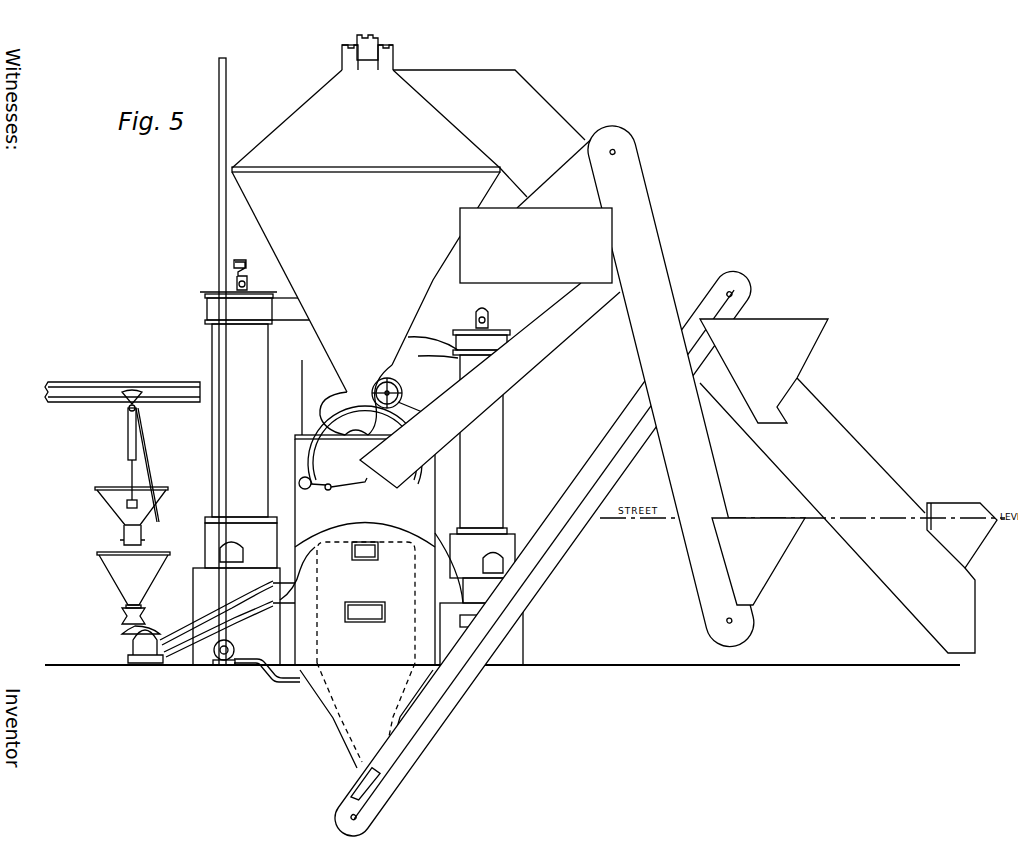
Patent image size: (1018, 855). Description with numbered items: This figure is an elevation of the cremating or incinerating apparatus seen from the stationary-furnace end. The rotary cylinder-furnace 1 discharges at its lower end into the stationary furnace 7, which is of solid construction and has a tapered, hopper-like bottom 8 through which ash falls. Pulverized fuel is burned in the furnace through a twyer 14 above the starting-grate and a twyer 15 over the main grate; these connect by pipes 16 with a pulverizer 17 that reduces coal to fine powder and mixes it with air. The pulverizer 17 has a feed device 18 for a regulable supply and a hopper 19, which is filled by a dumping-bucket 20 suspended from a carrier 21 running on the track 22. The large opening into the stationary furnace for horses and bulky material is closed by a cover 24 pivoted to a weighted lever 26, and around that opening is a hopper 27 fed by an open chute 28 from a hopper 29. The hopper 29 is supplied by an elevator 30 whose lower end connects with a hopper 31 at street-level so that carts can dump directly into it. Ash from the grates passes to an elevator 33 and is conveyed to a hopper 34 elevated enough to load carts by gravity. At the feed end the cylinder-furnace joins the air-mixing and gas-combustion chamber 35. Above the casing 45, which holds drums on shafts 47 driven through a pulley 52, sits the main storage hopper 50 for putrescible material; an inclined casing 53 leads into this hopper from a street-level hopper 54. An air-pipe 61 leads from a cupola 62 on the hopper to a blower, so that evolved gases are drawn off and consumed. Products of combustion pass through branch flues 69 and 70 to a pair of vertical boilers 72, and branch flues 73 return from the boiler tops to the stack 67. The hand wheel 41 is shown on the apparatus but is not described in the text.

The rotary cylinder-furnace 1 is at (420, 500).
The stationary furnace 7 is at (365, 552).
The hopper-like bottom 8 is at (366, 716).
The twyer 14 is at (285, 585).
The twyer 15 is at (283, 606).
The pipes 16 is at (216, 619).
The pulverizer 17 is at (136, 644).
The feed device 18 is at (142, 611).
The hopper 19 is at (133, 578).
The dumping-bucket 20 is at (131, 516).
The carrier 21 is at (124, 401).
The track 22 is at (122, 384).
The cover 24 is at (346, 480).
The weighted lever 26 is at (310, 475).
The hopper 27 is at (365, 447).
The open chute 28 is at (490, 385).
The hopper 29 is at (536, 245).
The elevator 30 is at (638, 386).
The hopper 31 is at (758, 561).
The elevator 33 is at (543, 553).
The hopper 34 is at (764, 371).
The air-mixing and gas-combustion chamber 35 is at (300, 490).
The hand wheel valve 41 is at (392, 384).
The casing 45 is at (360, 423).
The shafts 47 is at (356, 400).
The main storage hopper 50 is at (408, 235).
The pulley 52 is at (424, 415).
The inclined casing 53 is at (837, 515).
The hopper 54 is at (972, 497).
The air-pipe 61 is at (219, 250).
The cupola 62 is at (366, 52).
The stack 67 is at (397, 57).
The branch flue 69 is at (297, 563).
The branch flue 70 is at (479, 486).
The vertical boilers 72 is at (236, 462).
The branch flues 73 is at (365, 328).